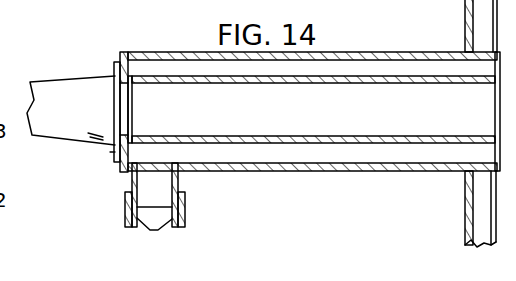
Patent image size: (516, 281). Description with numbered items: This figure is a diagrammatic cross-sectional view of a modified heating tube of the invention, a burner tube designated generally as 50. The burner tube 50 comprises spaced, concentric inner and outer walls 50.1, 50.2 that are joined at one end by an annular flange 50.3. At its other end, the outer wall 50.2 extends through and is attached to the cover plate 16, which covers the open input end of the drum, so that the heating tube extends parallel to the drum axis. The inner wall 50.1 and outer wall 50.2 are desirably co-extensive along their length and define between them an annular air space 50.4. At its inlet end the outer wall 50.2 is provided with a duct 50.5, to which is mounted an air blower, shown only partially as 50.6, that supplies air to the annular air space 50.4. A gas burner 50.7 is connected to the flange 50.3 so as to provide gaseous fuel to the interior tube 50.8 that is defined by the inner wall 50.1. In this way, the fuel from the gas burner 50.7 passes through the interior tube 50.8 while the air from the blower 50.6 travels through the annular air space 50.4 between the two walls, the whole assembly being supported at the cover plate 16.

The burner tube 50 is at (300, 186).
The inner wall 50.1 is at (242, 79).
The outer wall 50.2 is at (395, 169).
The annular flange 50.3 is at (128, 68).
The annular air space 50.4 is at (388, 67).
The duct 50.5 is at (130, 177).
The air blower 50.6 is at (127, 210).
The gas burner 50.7 is at (57, 88).
The interior tube 50.8 is at (408, 119).
The cover plate 16 is at (467, 16).